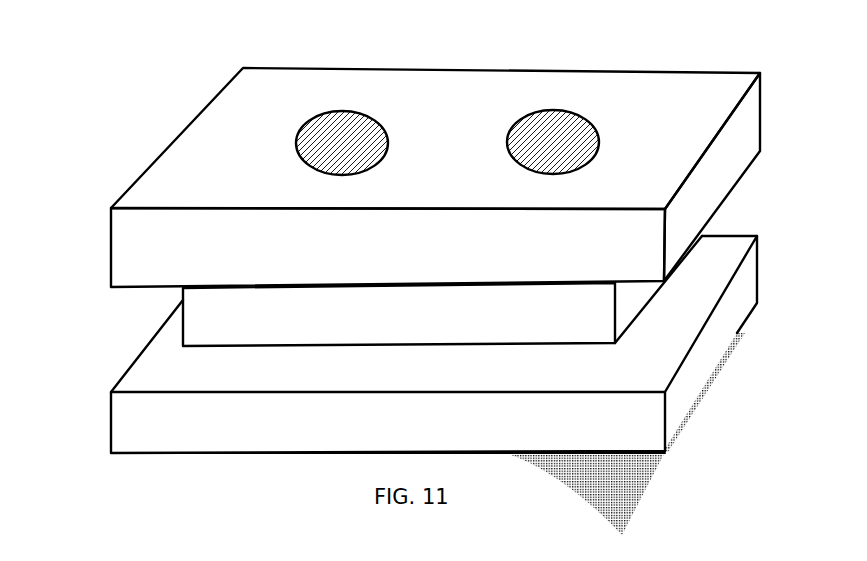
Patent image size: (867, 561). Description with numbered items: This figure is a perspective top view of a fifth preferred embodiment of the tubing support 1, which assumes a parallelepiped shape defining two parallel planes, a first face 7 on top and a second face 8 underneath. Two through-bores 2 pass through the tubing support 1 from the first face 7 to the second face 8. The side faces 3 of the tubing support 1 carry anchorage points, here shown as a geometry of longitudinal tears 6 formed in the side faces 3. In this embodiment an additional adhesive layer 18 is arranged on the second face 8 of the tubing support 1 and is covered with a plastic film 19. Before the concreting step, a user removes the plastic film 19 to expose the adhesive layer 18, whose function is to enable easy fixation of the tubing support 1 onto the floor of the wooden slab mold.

The tubing support 1 is at (422, 267).
The through-bore 2 is at (340, 138).
The side faces 3 is at (422, 280).
The longitudinal tears 6 is at (183, 333).
The first face 7 is at (690, 95).
The second face 8 is at (120, 455).
The adhesive layer 18 is at (655, 453).
The plastic film 19 is at (613, 482).